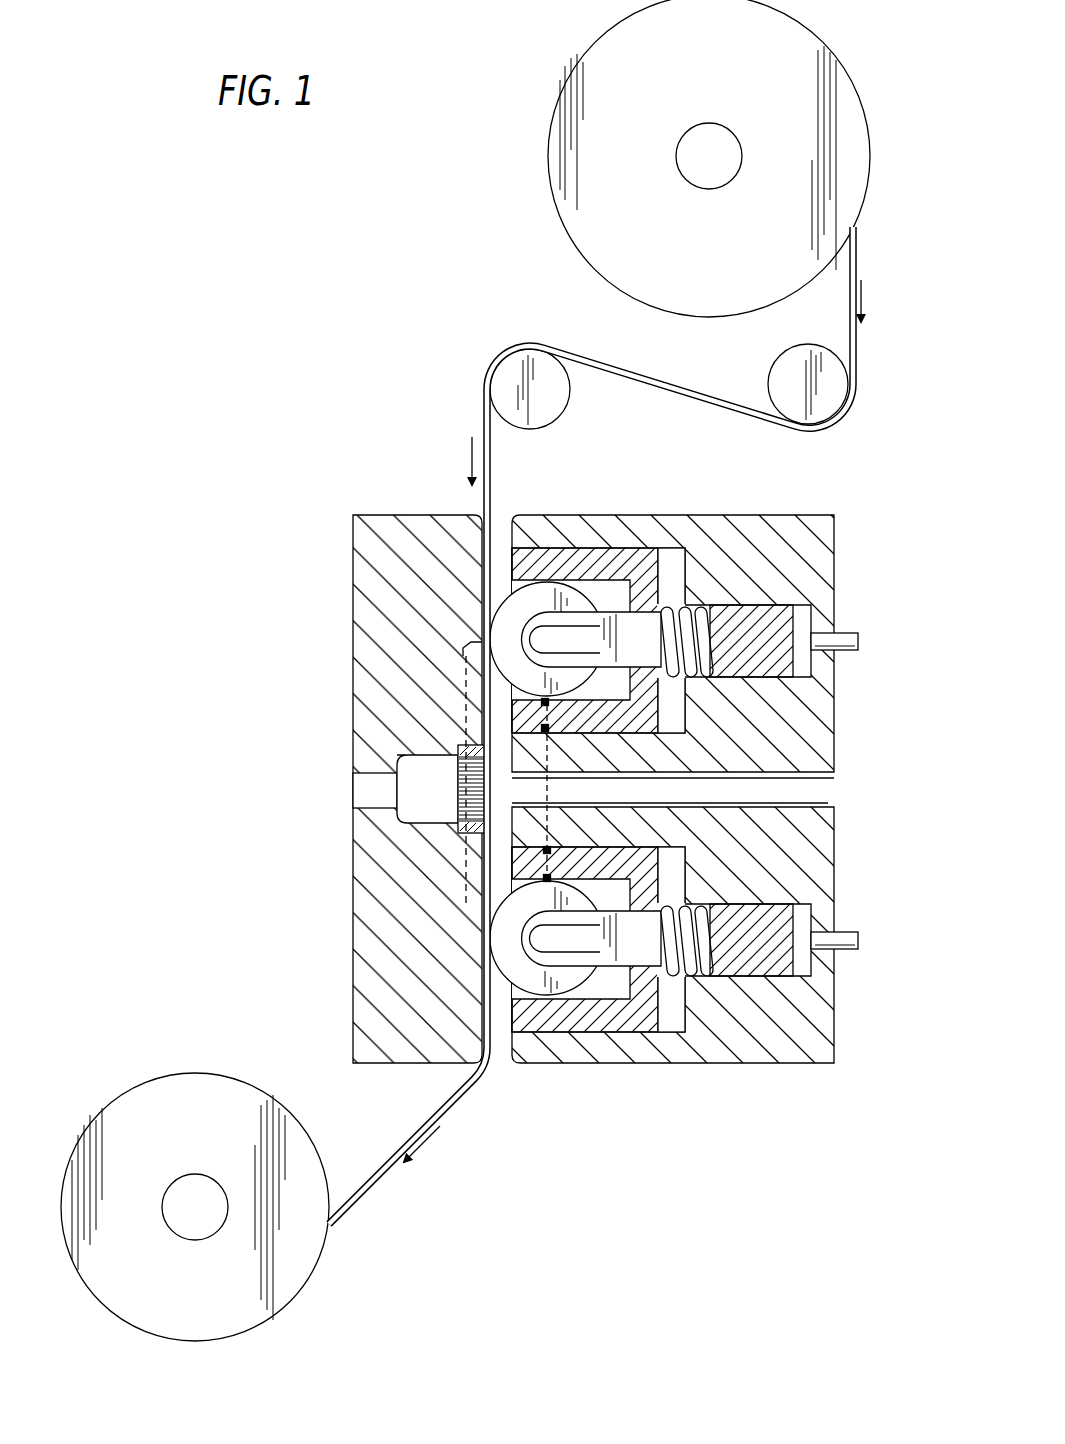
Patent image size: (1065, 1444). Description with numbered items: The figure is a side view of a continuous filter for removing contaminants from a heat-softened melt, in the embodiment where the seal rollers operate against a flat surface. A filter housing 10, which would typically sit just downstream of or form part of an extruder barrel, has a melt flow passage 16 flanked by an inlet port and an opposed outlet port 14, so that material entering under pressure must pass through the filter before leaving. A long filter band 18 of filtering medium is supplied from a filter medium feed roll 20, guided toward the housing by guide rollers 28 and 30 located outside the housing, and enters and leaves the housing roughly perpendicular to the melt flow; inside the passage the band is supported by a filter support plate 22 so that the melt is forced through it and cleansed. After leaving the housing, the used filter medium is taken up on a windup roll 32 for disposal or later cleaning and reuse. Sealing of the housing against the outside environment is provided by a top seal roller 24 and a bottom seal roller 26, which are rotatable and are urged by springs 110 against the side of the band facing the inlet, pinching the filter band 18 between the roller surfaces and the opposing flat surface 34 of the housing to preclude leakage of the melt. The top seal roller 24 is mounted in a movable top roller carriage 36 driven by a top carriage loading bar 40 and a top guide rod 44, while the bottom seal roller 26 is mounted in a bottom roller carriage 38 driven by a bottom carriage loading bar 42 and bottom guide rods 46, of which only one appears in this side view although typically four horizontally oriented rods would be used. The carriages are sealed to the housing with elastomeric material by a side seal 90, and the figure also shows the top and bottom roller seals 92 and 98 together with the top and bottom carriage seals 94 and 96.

The filter housing 10 is at (370, 610).
The outlet port 14 is at (382, 807).
The melt flow passage 16 is at (800, 778).
The filter band 18 is at (365, 1190).
The filter medium feed roll 20 is at (552, 130).
The filter support plate 22 is at (455, 775).
The top seal roller 24 is at (547, 592).
The bottom seal roller 26 is at (557, 985).
The guide roller 28 is at (507, 355).
The guide roller 30 is at (848, 388).
The windup roll 32 is at (151, 1075).
The flat surface 34 is at (494, 612).
The top roller carriage 36 is at (640, 562).
The bottom roller carriage 38 is at (653, 1022).
The top carriage loading bar 40 is at (778, 612).
The bottom carriage loading bar 42 is at (782, 965).
The top guide rod 44 is at (852, 641).
The bottom guide rod 46 is at (855, 940).
The side seal 90 is at (466, 907).
The top roller seal 92 is at (543, 703).
The top carriage seal 94 is at (543, 728).
The bottom carriage seal 96 is at (545, 850).
The bottom roller seal 98 is at (545, 878).
The springs 110 is at (693, 605).